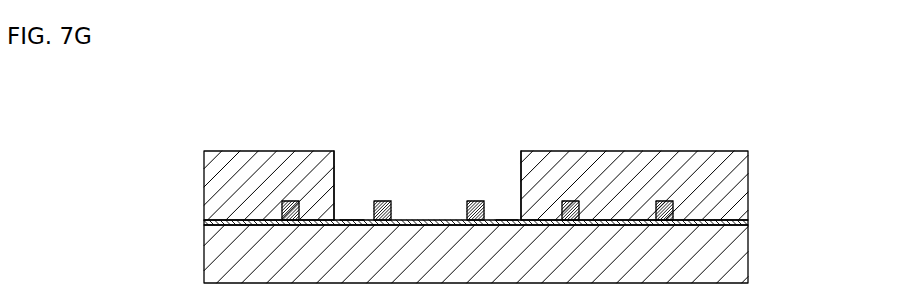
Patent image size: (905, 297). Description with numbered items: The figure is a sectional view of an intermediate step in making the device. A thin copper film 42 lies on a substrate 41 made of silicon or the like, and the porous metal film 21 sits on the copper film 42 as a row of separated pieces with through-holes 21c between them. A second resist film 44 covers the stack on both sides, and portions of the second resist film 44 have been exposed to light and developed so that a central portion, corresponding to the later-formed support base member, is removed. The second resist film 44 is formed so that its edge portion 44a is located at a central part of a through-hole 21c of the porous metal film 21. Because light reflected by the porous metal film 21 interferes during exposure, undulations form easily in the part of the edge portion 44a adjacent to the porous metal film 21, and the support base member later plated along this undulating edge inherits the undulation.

The porous metal film 21 is at (657, 202).
The through-hole 21c is at (354, 196).
The substrate 41 is at (738, 255).
The thin copper film 42 is at (738, 222).
The second resist film 44 is at (738, 185).
The edge portion 44a is at (334, 174).